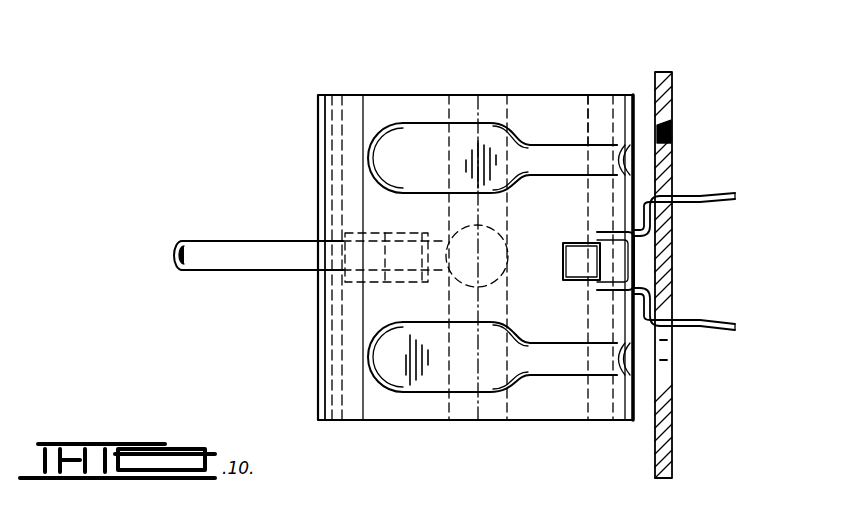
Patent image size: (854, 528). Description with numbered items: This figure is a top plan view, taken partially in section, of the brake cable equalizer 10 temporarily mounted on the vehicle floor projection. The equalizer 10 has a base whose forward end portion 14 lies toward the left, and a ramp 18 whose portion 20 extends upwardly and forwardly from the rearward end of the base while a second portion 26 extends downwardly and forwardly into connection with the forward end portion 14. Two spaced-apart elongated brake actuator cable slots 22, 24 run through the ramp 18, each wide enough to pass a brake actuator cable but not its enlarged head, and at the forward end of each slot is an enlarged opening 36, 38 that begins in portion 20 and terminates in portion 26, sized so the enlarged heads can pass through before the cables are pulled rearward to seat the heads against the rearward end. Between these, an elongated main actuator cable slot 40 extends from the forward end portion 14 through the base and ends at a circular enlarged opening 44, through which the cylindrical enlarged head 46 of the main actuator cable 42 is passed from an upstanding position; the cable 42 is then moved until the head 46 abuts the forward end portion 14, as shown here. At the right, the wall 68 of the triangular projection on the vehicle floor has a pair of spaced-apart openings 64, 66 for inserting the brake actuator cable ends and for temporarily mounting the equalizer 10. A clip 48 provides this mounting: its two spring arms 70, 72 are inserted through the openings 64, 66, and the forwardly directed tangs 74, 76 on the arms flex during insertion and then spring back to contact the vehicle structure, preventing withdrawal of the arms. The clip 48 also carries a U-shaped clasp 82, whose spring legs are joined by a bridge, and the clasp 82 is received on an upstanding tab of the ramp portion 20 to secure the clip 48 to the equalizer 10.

The brake cable equalizer 10 is at (514, 64).
The forward end portion 14 is at (327, 205).
The ramp 18 is at (404, 94).
The ramp portion 20 is at (547, 95).
The brake actuator cable slot 22 is at (557, 355).
The brake actuator cable slot 24 is at (594, 154).
The second ramp portion 26 is at (372, 99).
The enlarged opening 36 is at (440, 388).
The enlarged opening 38 is at (434, 95).
The main actuator cable slot 40 is at (441, 266).
The main actuator cable 42 is at (200, 246).
The enlarged opening 44 is at (505, 264).
The enlarged head 46 is at (350, 233).
The clip 48 is at (697, 196).
The opening 64 is at (668, 142).
The opening 66 is at (670, 391).
The wall 68 is at (675, 78).
The spring arm 70 is at (728, 195).
The spring arm 72 is at (718, 322).
The tang 74 is at (690, 206).
The tang 76 is at (675, 314).
The U-shaped clasp 82 is at (600, 254).